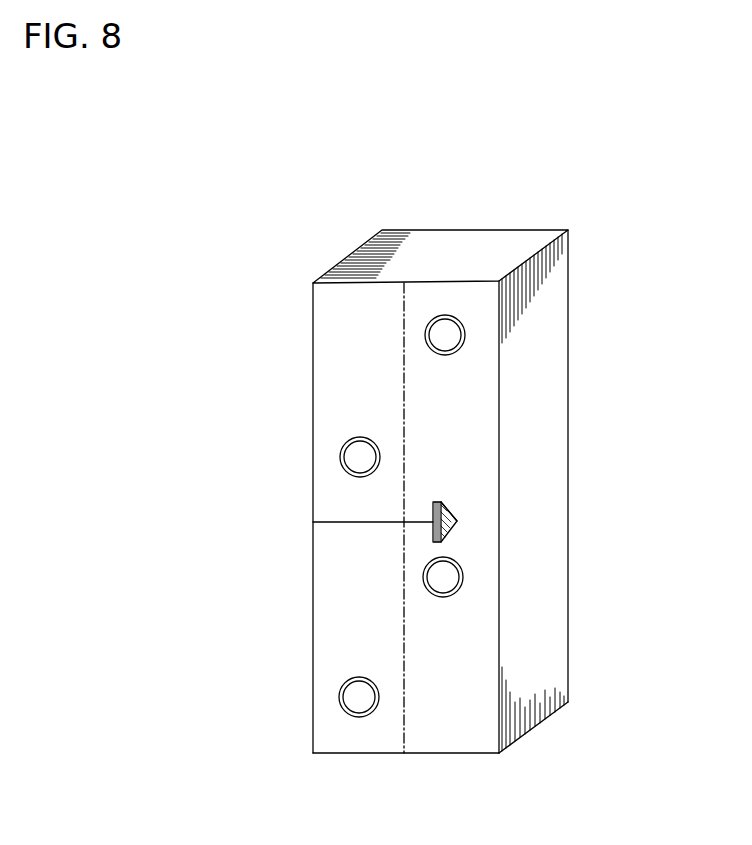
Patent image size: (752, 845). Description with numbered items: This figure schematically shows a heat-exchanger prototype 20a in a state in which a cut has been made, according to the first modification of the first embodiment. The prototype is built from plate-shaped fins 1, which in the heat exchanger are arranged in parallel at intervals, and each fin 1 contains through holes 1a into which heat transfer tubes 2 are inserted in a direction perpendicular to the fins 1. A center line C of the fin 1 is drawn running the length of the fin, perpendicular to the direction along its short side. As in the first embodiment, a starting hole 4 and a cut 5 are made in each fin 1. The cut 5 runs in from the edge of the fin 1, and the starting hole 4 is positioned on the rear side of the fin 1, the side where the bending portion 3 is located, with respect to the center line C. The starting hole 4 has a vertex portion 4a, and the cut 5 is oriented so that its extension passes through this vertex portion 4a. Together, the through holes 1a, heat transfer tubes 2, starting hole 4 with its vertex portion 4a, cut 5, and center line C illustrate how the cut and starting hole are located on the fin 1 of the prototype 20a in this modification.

The heat-exchanger prototype 20a is at (544, 195).
The fin 1 is at (330, 327).
The through hole 1a is at (447, 580).
The heat transfer tube 2 is at (463, 573).
The bending portion 3 is at (468, 533).
The starting hole 4 is at (453, 505).
The vertex portion 4a is at (458, 521).
The cut 5 is at (355, 522).
The center line C is at (404, 718).